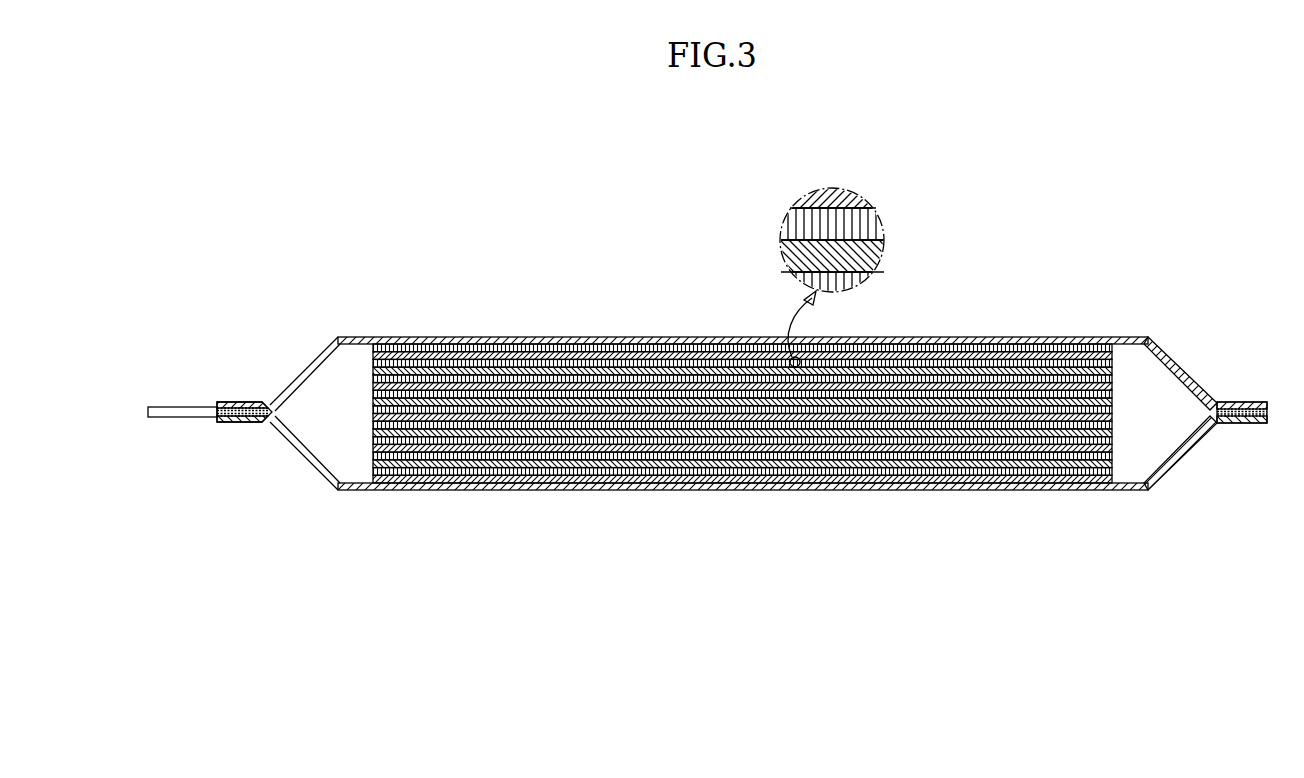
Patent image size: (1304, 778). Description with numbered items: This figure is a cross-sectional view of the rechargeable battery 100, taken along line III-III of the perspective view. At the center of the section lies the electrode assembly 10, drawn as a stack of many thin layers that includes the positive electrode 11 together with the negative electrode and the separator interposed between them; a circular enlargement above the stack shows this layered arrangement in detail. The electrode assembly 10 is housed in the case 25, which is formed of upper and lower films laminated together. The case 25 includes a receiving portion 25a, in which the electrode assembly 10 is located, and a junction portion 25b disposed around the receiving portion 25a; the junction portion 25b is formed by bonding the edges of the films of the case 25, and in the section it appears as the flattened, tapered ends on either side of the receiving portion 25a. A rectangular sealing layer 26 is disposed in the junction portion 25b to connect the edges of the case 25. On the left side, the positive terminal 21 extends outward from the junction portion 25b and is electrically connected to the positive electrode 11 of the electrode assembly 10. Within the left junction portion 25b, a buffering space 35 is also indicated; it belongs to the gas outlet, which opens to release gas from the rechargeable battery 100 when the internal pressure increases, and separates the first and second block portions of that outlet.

The rechargeable battery 100 is at (700, 122).
The electrode assembly 10 is at (547, 336).
The positive electrode 11 is at (843, 200).
The positive terminal 21 is at (170, 408).
The case 25 is at (326, 333).
The receiving portion 25a is at (384, 343).
The junction portion 25b is at (238, 402).
The sealing layer 26 is at (222, 422).
The buffering space 35 is at (247, 422).